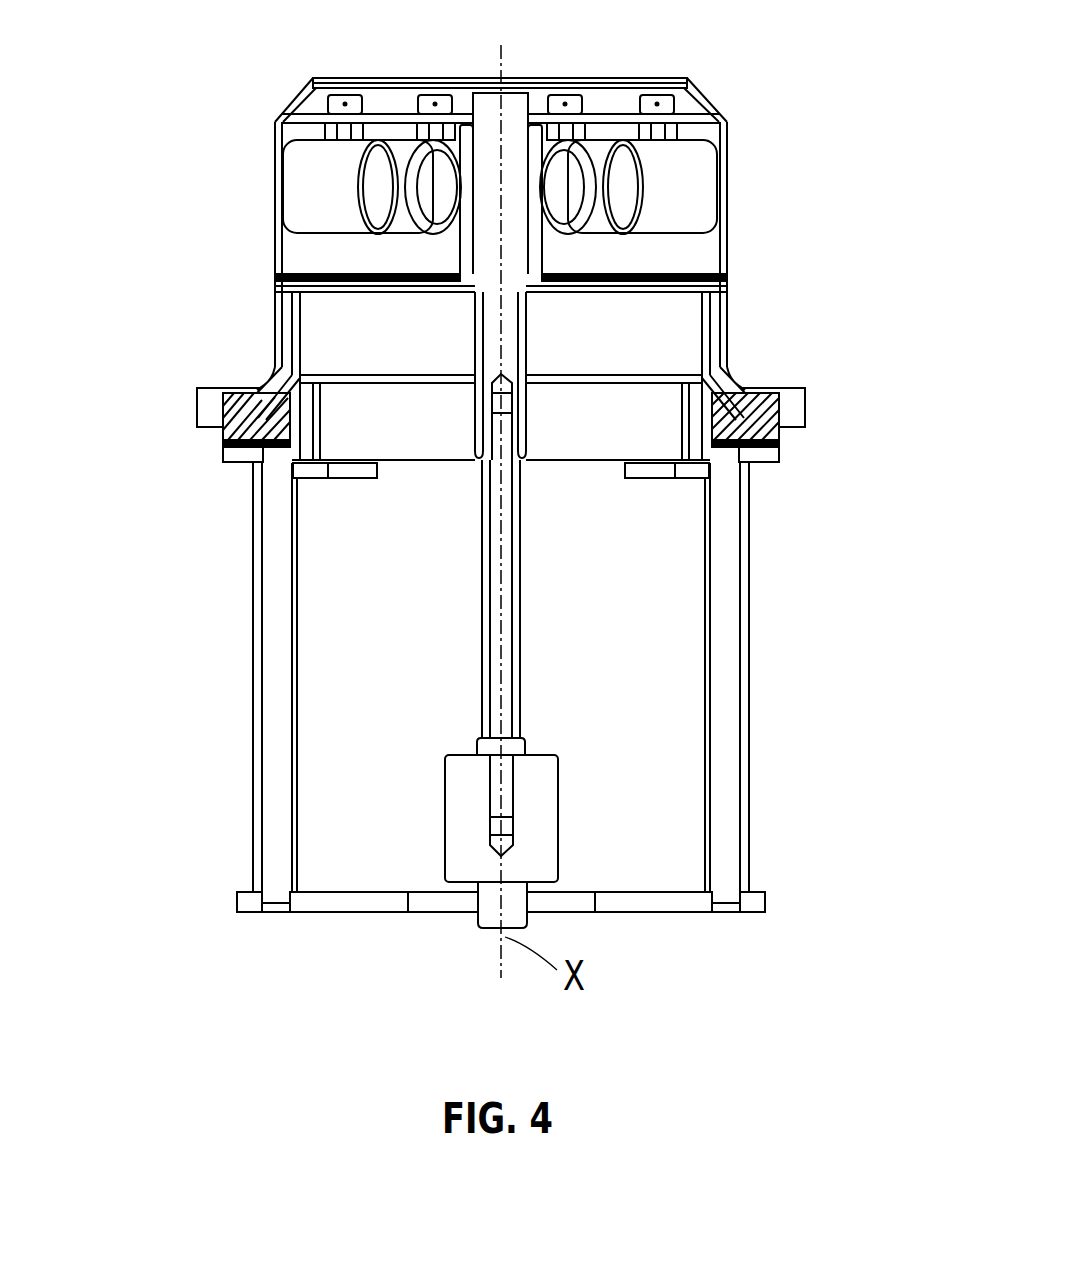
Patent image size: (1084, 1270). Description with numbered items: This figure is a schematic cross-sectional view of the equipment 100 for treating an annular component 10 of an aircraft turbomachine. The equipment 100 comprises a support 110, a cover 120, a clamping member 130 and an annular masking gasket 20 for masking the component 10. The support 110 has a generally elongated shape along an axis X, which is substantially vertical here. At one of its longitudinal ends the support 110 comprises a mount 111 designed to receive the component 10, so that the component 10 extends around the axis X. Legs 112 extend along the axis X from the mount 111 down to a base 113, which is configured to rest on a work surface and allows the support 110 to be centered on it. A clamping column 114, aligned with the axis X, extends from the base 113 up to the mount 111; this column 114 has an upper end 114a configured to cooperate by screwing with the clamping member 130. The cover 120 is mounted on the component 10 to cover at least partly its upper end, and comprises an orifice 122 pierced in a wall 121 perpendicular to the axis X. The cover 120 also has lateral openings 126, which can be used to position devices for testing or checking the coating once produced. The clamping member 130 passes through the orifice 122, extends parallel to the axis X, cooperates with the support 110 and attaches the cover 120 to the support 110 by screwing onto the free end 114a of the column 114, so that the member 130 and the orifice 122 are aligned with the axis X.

The equipment 100 is at (266, 56).
The clamping member 130 is at (490, 95).
The lateral opening 126 is at (627, 193).
The wall 121 is at (340, 272).
The cover 120 is at (747, 230).
The orifice 122 is at (455, 300).
The annular component 10 is at (755, 366).
The annular masking gasket 20 is at (200, 444).
The mount 111 is at (782, 463).
The upper end 114a is at (478, 430).
The support 110 is at (768, 598).
The legs 112 is at (265, 682).
The clamping column 114 is at (493, 651).
The base 113 is at (615, 913).